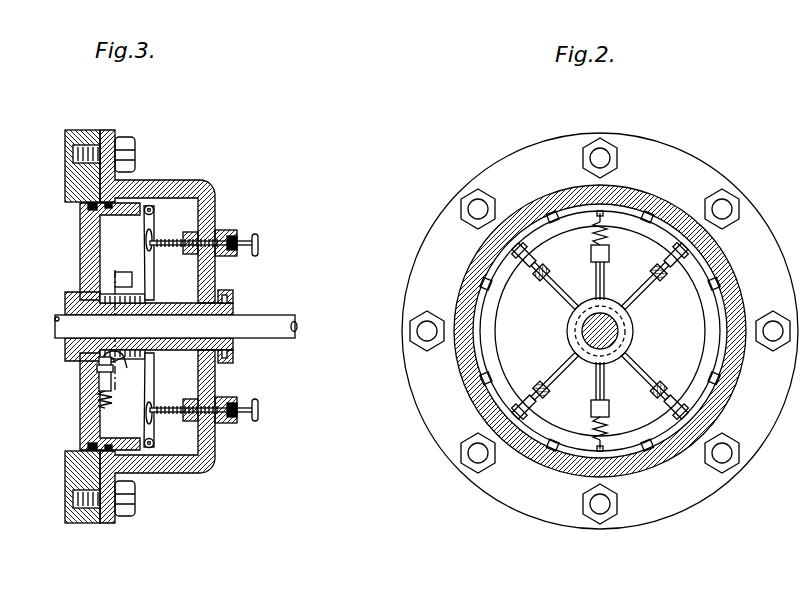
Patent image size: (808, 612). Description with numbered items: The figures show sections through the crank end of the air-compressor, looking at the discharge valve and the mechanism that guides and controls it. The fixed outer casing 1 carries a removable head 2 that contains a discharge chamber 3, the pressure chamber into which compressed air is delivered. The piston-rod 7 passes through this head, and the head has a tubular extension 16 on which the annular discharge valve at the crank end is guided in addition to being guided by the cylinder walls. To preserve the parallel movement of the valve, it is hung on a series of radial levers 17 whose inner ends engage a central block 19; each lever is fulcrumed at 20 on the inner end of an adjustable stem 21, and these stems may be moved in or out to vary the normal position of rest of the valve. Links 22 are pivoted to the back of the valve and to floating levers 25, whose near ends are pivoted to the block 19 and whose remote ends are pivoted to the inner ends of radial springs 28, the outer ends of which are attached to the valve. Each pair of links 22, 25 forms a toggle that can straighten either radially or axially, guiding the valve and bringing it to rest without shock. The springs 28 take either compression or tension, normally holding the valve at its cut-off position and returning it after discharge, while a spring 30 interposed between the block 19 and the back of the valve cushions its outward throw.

In FIG. 3, the fixed outer casing 1 is at (76, 131).
In FIG. 2, the fixed outer casing 1 is at (673, 166).
In FIG. 3, the removable head 2 is at (178, 186).
In FIG. 2, the removable head 2 is at (480, 245).
In FIG. 2, the discharge chamber 3 is at (724, 216).
In FIG. 3, the piston-rod 7 is at (277, 316).
In FIG. 2, the piston-rod 7 is at (594, 331).
In FIG. 3, the tubular extension 16 is at (66, 310).
In FIG. 2, the tubular extension 16 is at (628, 324).
In FIG. 3, the radial lever 17 is at (144, 256).
In FIG. 2, the radial lever 17 is at (556, 294).
In FIG. 3, the central block 19 is at (165, 297).
In FIG. 2, the central block 19 is at (632, 336).
In FIG. 3, the fulcrum 20 is at (146, 238).
In FIG. 3, the adjustable stem 21 is at (170, 242).
In FIG. 2, the adjustable stem 21 is at (543, 277).
In FIG. 3, the link 22 is at (104, 360).
In FIG. 2, the link 22 is at (598, 385).
In FIG. 3, the floating lever 25 is at (98, 380).
In FIG. 2, the floating lever 25 is at (595, 394).
In FIG. 2, the radial spring 28 is at (607, 432).
In FIG. 3, the spring 30 is at (114, 280).